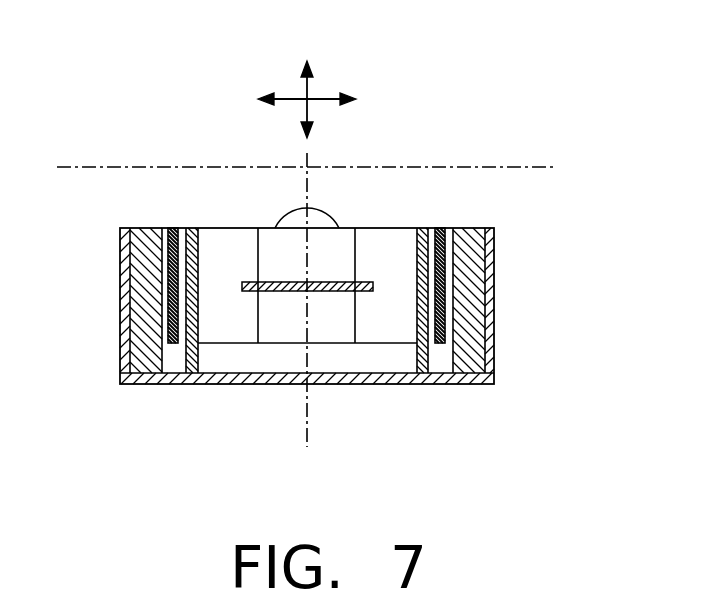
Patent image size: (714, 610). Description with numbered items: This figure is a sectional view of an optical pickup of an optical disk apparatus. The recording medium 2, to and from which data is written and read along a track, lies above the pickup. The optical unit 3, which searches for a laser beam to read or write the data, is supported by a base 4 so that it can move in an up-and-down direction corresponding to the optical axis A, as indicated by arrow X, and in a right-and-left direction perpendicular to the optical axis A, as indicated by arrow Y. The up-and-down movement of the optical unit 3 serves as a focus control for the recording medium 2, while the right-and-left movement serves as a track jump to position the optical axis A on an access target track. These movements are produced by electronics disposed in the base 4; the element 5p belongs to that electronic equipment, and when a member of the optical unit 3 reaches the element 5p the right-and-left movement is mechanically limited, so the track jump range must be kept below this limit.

The recording medium 2 is at (500, 166).
The optical unit 3 is at (277, 332).
The base 4 is at (495, 298).
The element 5p is at (181, 357).
The optical axis A is at (308, 415).
The arrow X is at (310, 88).
The arrow Y is at (290, 97).